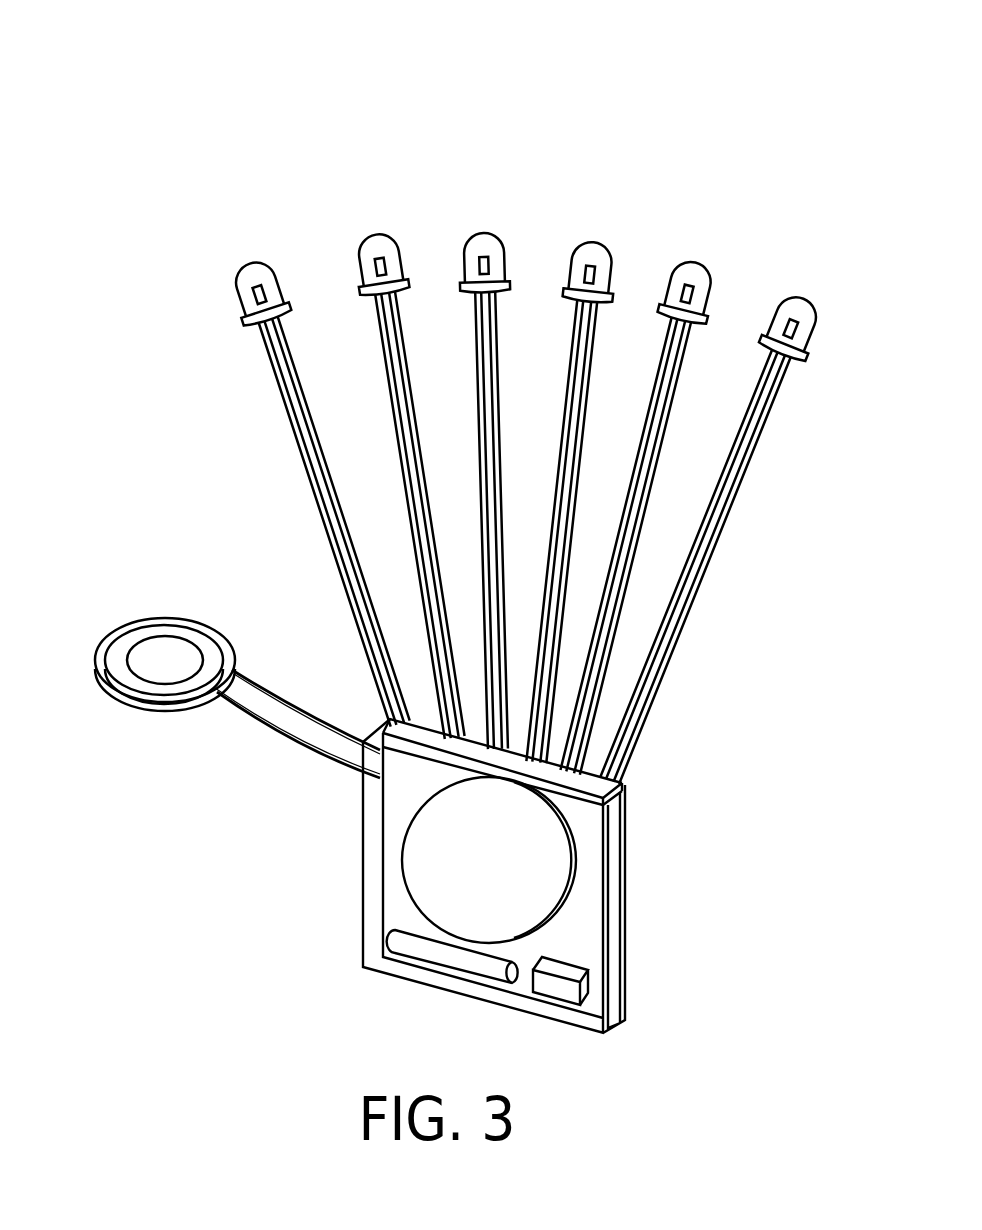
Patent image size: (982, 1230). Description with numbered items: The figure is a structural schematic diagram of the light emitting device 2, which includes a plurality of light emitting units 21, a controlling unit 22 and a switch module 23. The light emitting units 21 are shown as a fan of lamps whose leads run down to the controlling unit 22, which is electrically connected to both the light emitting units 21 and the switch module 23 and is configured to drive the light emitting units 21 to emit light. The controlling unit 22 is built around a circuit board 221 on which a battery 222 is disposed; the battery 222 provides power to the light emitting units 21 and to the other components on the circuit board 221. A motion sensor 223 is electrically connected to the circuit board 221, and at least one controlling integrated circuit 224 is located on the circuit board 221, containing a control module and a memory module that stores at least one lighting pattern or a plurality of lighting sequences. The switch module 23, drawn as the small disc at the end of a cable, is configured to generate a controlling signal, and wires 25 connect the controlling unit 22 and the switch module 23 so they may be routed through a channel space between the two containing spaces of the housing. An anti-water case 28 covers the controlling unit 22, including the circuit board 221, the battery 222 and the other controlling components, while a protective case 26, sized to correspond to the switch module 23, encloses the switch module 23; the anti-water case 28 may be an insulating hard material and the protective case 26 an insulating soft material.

The light emitting device 2 is at (432, 122).
The light emitting units 21 is at (257, 278).
The controlling unit 22 is at (662, 872).
The switch module 23 is at (152, 660).
The wires 25 is at (689, 599).
The protective case 26 is at (194, 619).
The anti-water case 28 is at (631, 813).
The circuit board 221 is at (402, 791).
The battery 222 is at (402, 892).
The motion sensor 223 is at (445, 953).
The controlling integrated circuit 224 is at (567, 985).